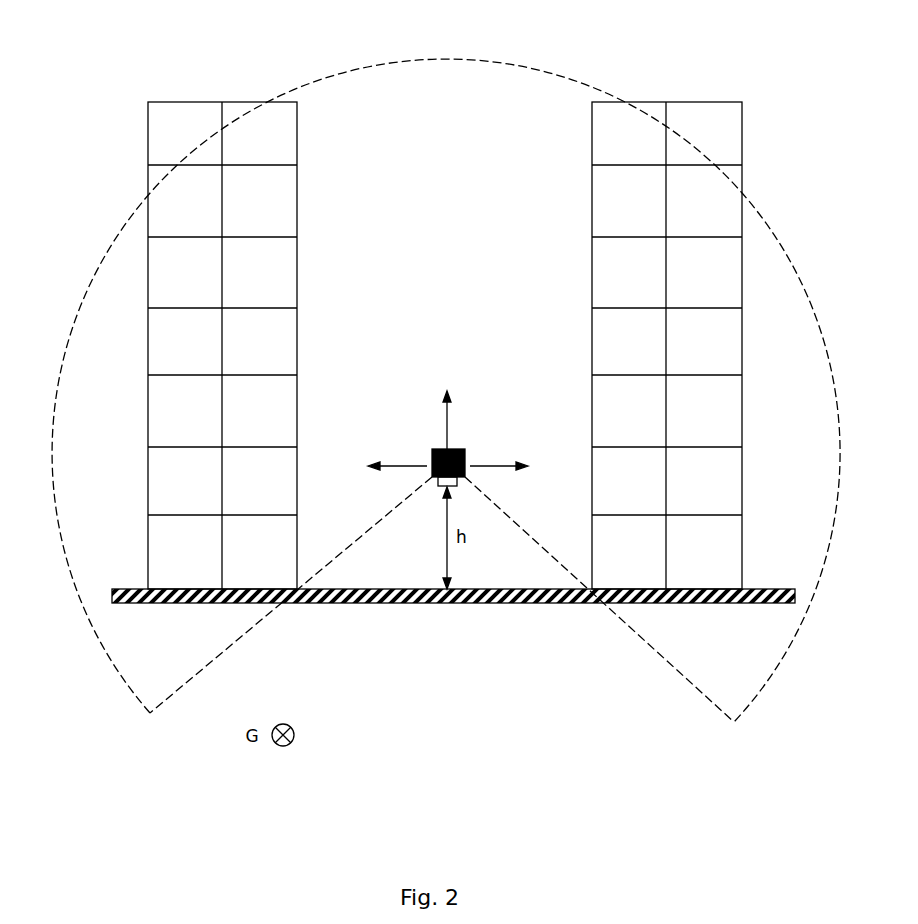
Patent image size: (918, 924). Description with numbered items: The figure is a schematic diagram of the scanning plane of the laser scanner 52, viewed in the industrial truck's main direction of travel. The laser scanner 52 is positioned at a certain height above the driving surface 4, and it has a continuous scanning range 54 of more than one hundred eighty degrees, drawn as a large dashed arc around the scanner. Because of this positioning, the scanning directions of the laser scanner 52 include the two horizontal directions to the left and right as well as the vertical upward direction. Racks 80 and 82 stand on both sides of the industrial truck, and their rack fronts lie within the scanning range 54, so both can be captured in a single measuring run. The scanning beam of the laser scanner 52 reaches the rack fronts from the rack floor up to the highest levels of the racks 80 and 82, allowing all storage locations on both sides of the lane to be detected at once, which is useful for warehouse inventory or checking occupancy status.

The scanning range 54 is at (327, 93).
The rack 80 is at (315, 185).
The rack 82 is at (572, 184).
The laser scanner 52 is at (436, 450).
The driving surface 4 is at (391, 603).